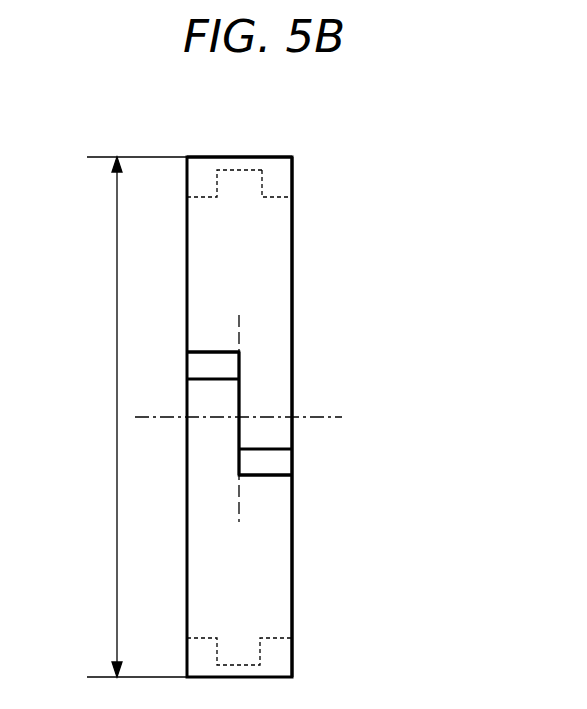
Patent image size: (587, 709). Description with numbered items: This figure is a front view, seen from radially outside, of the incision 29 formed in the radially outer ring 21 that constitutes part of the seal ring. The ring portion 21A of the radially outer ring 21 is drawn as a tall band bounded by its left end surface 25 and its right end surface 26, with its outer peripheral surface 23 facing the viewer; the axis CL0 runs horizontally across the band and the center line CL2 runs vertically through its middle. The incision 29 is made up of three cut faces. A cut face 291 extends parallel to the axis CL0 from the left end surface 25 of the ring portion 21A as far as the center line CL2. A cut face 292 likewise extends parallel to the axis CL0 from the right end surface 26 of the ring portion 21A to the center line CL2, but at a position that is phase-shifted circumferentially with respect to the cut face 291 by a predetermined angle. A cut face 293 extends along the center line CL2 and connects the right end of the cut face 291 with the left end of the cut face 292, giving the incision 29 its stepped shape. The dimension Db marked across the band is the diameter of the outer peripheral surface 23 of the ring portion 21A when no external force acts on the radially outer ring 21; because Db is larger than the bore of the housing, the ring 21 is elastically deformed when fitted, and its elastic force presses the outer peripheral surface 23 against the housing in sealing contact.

The radially outer ring 21 is at (328, 135).
The ring portion 21A is at (292, 172).
The outer peripheral surface 23 is at (238, 157).
The left end surface 25 is at (187, 190).
The right end surface 26 is at (292, 190).
The incision 29 is at (301, 470).
The cut face 291 is at (200, 360).
The cut face 292 is at (266, 452).
The cut face 293 is at (239, 427).
The axis CL0 is at (259, 417).
The center line CL2 is at (239, 320).
The diameter of the outer peripheral surface Db is at (129, 417).